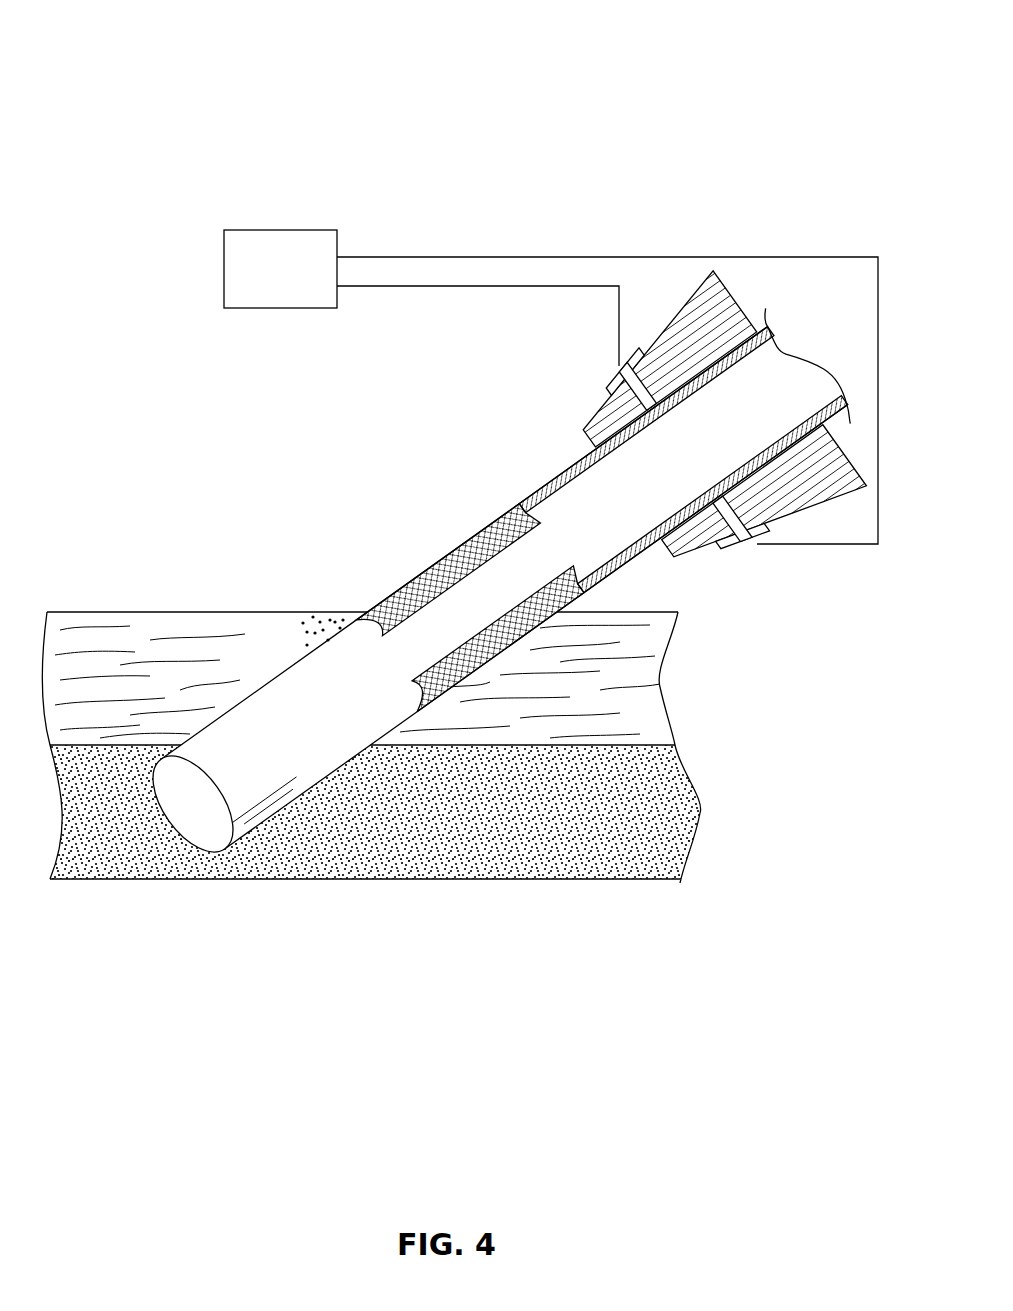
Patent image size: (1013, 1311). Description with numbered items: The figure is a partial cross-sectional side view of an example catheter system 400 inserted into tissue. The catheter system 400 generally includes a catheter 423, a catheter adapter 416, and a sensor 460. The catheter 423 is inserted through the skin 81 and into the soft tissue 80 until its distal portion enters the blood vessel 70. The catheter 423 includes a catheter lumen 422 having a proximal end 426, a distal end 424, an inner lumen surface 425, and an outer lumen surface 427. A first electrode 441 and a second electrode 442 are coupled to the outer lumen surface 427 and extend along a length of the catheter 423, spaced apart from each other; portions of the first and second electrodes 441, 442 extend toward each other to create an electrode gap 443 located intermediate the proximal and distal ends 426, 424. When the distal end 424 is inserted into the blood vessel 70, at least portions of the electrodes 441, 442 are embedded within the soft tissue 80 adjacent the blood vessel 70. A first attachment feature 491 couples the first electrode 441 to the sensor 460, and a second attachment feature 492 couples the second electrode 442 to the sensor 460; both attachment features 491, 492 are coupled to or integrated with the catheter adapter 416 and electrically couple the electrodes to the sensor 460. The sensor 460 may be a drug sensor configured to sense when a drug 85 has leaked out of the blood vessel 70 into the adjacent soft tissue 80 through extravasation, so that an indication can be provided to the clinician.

The catheter system 400 is at (133, 54).
The blood vessel 70 is at (682, 806).
The soft tissue 80 is at (650, 680).
The skin 81 is at (187, 611).
The drug 85 is at (318, 620).
The catheter adapter 416 is at (654, 359).
The catheter lumen 422 is at (683, 454).
The catheter 423 is at (322, 425).
The distal end 424 is at (536, 627).
The inner lumen surface 425 is at (193, 804).
The proximal end 426 is at (764, 513).
The outer lumen surface 427 is at (464, 543).
The first electrode 441 is at (448, 571).
The second electrode 442 is at (495, 639).
The electrode gap 443 is at (507, 580).
The sensor 460 is at (297, 277).
The first attachment feature 491 is at (634, 385).
The second attachment feature 492 is at (733, 523).